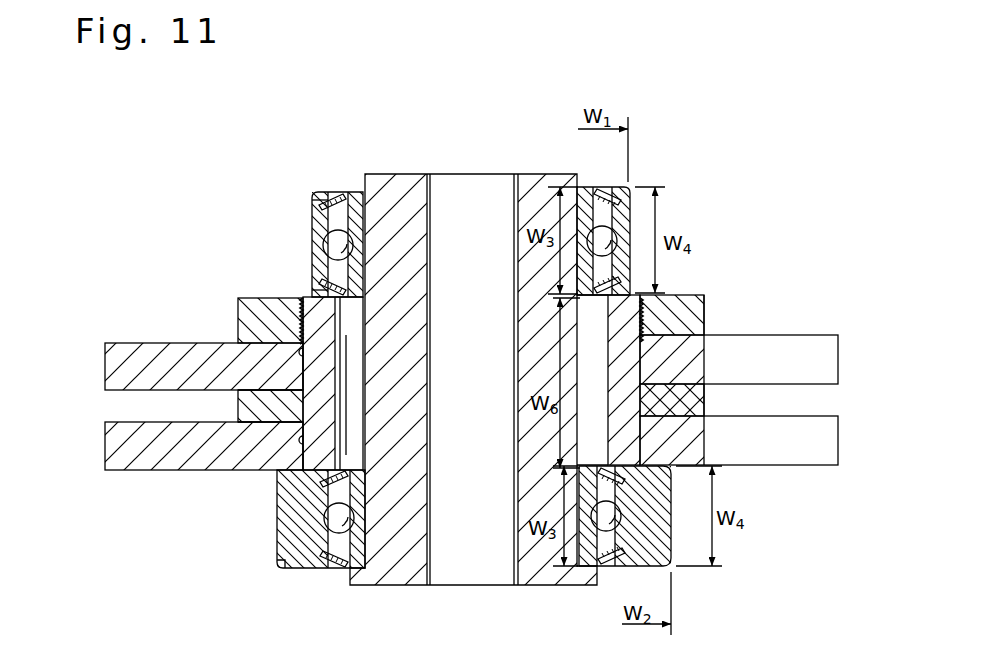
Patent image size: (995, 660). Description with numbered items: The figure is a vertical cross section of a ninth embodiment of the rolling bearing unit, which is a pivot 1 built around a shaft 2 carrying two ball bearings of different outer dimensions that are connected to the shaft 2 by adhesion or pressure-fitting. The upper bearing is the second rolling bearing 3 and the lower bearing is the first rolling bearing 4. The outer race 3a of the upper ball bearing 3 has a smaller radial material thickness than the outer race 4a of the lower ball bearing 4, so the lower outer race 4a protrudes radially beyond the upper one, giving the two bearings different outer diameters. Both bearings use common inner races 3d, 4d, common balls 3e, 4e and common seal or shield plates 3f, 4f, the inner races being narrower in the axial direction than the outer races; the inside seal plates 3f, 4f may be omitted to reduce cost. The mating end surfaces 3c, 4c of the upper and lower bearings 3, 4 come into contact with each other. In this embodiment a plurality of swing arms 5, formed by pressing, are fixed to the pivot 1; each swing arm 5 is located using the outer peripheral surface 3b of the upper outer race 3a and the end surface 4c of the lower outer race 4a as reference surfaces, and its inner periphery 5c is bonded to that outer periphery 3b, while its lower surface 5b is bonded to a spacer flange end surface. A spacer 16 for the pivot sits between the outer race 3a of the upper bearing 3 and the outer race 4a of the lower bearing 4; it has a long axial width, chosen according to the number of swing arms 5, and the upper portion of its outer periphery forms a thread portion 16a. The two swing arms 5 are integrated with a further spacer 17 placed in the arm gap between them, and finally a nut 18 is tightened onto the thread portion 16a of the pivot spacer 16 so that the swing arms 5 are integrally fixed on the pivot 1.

The pivot 1 is at (400, 172).
The shaft 2 is at (381, 181).
The second rolling bearing 3 is at (310, 200).
The outer race of the second rolling bearing 3a is at (333, 240).
The outer peripheral surface of the outer race 3b is at (312, 262).
The mating end surface of the upper ball bearing 3c is at (312, 296).
The inner race of the upper ball bearing 3d is at (353, 218).
The balls of the upper ball bearing 3e is at (322, 208).
The seal or shield plate of the upper ball bearing 3f is at (338, 195).
The first rolling bearing 4 is at (275, 539).
The outer race of the first rolling bearing 4a is at (278, 563).
The end surface of the outer race of the lower ball bearing 4c is at (277, 512).
The inner race of the lower ball bearing 4d is at (369, 543).
The balls of the lower ball bearing 4e is at (332, 533).
The seal or shield plate of the lower ball bearing 4f is at (341, 560).
The swing arm 5 is at (138, 350).
The lower surface of the swing arm 5b is at (253, 387).
The inner periphery of the swing arm 5c is at (290, 360).
The spacer for the pivot 16 is at (333, 367).
The thread portion of the pivot spacer 16a is at (333, 318).
The spacer 17 is at (247, 407).
The nut 18 is at (240, 298).